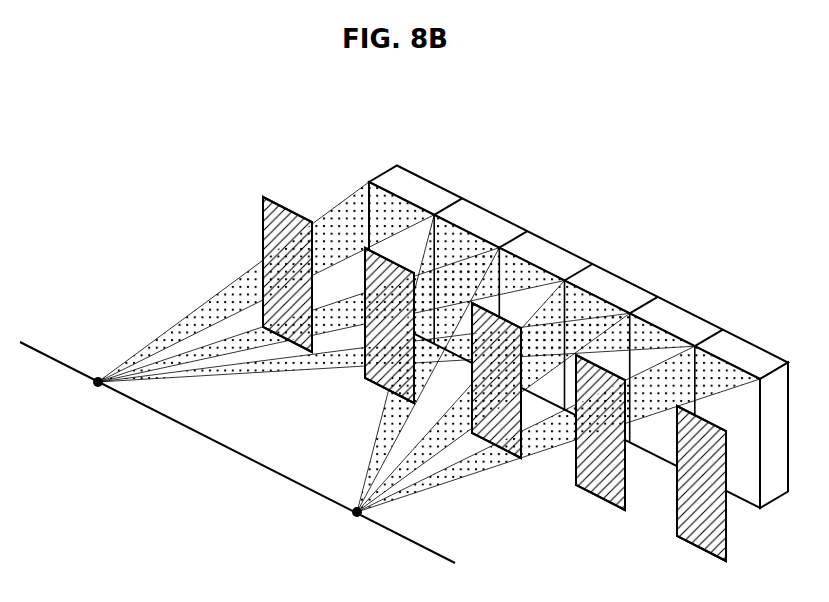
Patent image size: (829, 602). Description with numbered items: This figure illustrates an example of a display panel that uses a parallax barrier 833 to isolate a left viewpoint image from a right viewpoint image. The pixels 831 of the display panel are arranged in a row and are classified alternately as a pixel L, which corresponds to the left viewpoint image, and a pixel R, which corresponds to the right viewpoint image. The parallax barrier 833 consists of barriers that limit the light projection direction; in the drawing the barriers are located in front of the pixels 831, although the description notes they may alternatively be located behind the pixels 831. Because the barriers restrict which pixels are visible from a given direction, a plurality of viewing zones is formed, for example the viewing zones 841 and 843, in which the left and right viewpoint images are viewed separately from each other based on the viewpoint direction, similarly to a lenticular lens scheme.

The pixels 831 is at (388, 178).
The parallax barrier 833 is at (262, 221).
The viewing zone 841 is at (95, 388).
The viewing zone 843 is at (354, 518).